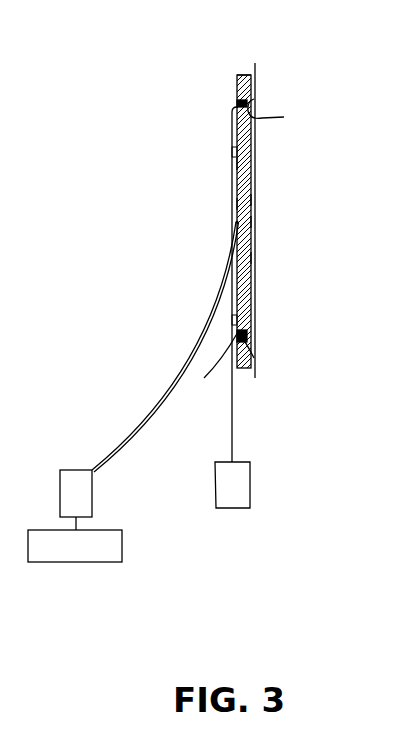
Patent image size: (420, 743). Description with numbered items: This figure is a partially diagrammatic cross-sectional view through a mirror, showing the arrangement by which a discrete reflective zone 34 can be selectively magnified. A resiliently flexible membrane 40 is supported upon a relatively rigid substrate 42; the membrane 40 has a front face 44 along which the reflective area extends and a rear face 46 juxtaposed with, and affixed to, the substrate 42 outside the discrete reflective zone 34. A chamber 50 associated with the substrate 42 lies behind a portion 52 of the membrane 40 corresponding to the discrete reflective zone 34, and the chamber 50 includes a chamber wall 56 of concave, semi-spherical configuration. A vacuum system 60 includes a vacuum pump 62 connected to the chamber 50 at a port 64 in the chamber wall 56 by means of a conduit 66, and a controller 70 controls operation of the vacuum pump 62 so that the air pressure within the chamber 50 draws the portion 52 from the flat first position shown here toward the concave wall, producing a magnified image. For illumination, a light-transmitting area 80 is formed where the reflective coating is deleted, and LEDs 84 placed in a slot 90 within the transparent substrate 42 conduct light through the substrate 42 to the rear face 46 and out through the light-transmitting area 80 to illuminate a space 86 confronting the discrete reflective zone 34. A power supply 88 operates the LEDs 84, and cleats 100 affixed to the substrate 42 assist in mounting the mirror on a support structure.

The discrete reflective zone 34 is at (255, 222).
The membrane 40 is at (257, 285).
The substrate 42 is at (234, 162).
The front face 44 is at (255, 74).
The rear face 46 is at (234, 119).
The chamber 50 is at (255, 200).
The portion of the membrane 52 is at (238, 203).
The chamber wall 56 is at (255, 258).
The vacuum system 60 is at (70, 470).
The vacuum pump 62 is at (92, 488).
The port 64 is at (236, 223).
The conduit 66 is at (178, 367).
The controller 70 is at (75, 562).
The light-transmitting area 80 is at (255, 95).
The LEDs 84 is at (253, 88).
The space 86 is at (293, 329).
The power supply 88 is at (215, 490).
The slot 90 is at (249, 251).
The cleats 100 is at (231, 151).